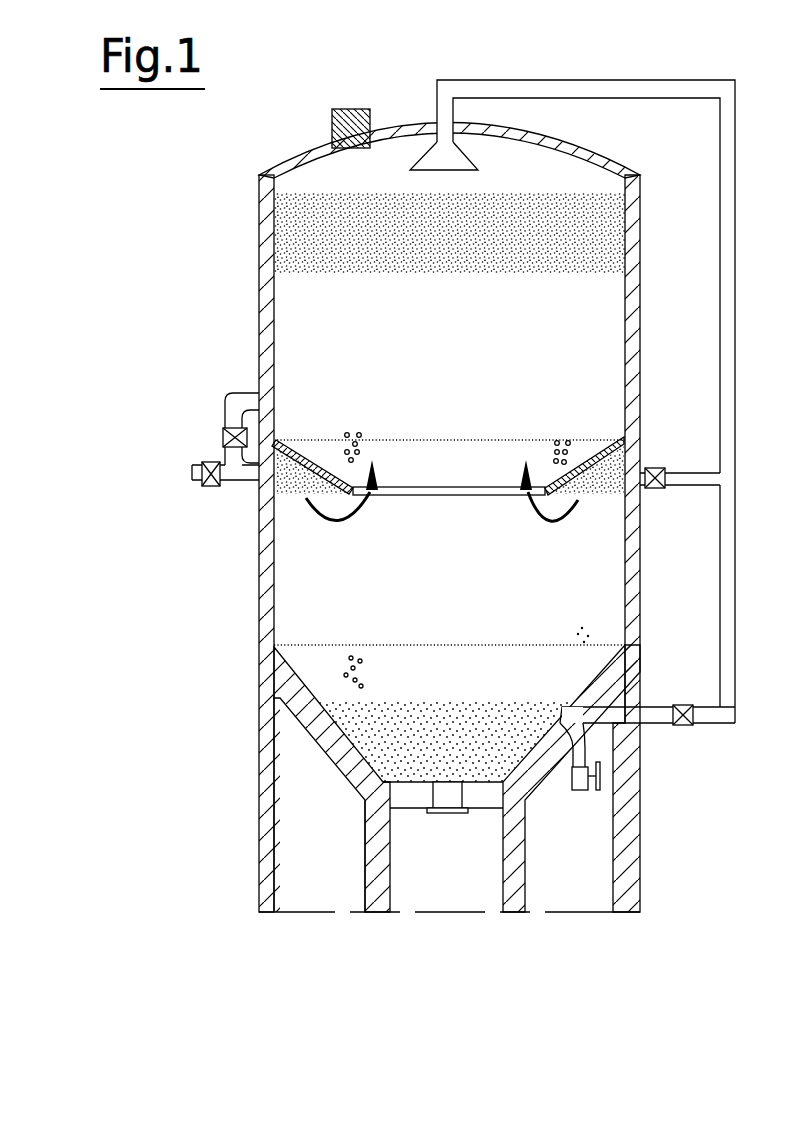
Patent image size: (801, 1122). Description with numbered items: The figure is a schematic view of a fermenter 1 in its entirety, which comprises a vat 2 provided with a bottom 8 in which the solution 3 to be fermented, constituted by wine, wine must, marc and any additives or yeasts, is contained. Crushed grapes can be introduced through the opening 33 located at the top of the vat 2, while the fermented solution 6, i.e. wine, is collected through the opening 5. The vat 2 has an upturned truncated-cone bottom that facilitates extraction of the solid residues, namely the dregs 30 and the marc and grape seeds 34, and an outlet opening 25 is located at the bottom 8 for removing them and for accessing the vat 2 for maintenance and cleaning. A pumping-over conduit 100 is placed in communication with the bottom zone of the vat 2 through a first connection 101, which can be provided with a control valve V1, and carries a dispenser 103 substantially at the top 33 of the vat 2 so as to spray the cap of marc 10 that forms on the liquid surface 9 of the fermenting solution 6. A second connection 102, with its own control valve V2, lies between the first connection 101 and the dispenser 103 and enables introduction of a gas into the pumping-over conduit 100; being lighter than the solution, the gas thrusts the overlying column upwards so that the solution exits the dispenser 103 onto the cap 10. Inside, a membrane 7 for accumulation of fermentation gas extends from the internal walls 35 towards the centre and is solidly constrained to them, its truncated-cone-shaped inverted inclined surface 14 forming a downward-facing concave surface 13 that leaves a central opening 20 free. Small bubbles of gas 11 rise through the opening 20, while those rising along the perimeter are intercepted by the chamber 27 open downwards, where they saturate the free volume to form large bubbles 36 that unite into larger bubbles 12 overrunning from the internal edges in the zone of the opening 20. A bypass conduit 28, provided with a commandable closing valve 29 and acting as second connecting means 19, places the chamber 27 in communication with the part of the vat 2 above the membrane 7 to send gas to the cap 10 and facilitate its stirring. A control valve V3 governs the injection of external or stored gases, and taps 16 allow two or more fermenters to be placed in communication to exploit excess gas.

The fermenter 1 is at (169, 165).
The vat 2 is at (270, 568).
The solution to be fermented 3 is at (458, 639).
The opening for collecting the fermented solution 5 is at (572, 782).
The fermented solution 6 is at (454, 329).
The membrane for accumulation of fermentation gas 7 is at (300, 428).
The bottom 8 is at (372, 789).
The upper surface of packing 9 is at (322, 196).
The cap of marc 10 is at (449, 251).
The small bubbles of gas 11 is at (352, 690).
The larger bubbles 12 is at (359, 432).
The concave surface 13 is at (288, 484).
The truncated cone-shaped inverted inclined surface 14 is at (587, 442).
The taps 16 is at (168, 500).
The second connecting means 19 is at (212, 410).
The opening 20 is at (405, 462).
The outlet opening 25 is at (447, 813).
The chamber 27 is at (616, 503).
The bypass conduit 28 is at (245, 398).
The commandable closing valve 29 is at (222, 437).
The dregs 30 is at (373, 720).
The opening at the top of the vat 33 is at (355, 110).
The grape seeds 34 is at (400, 786).
The internal walls 35 is at (616, 260).
The large bubbles 36 is at (588, 500).
The pumping-over conduit 100 is at (700, 150).
The first connection 101 is at (650, 725).
The second connection 102 is at (695, 450).
The dispenser 103 is at (466, 152).
The control valve V1 is at (688, 725).
The control valve V2 is at (684, 505).
The control valve V3 is at (200, 472).